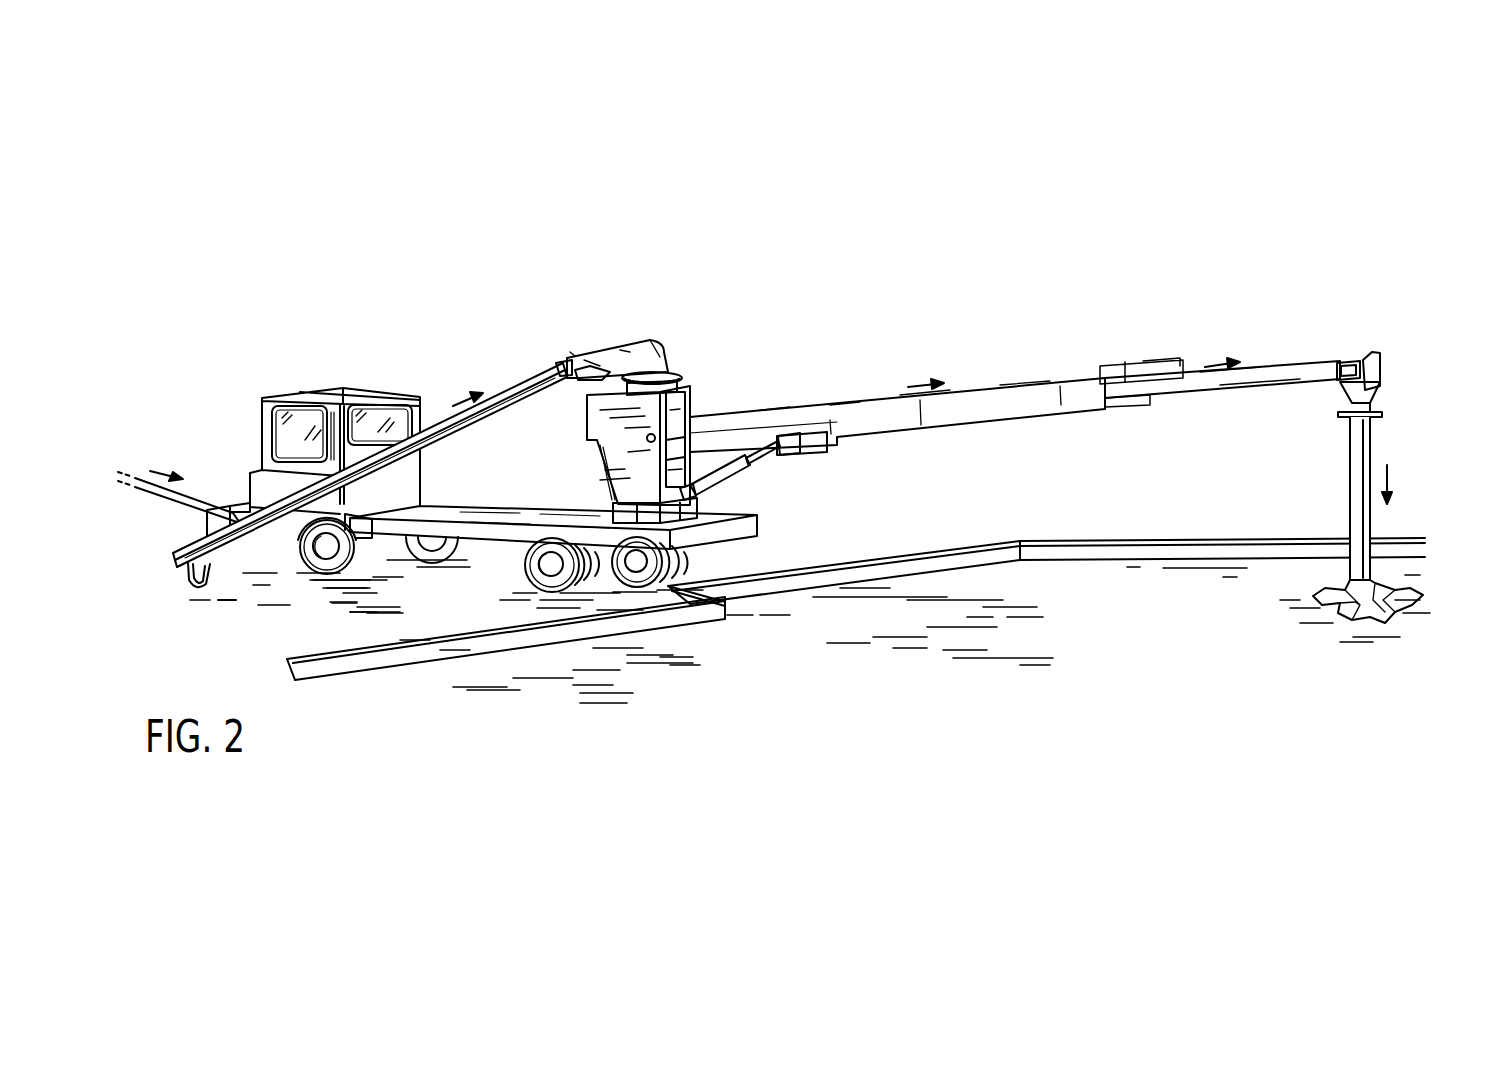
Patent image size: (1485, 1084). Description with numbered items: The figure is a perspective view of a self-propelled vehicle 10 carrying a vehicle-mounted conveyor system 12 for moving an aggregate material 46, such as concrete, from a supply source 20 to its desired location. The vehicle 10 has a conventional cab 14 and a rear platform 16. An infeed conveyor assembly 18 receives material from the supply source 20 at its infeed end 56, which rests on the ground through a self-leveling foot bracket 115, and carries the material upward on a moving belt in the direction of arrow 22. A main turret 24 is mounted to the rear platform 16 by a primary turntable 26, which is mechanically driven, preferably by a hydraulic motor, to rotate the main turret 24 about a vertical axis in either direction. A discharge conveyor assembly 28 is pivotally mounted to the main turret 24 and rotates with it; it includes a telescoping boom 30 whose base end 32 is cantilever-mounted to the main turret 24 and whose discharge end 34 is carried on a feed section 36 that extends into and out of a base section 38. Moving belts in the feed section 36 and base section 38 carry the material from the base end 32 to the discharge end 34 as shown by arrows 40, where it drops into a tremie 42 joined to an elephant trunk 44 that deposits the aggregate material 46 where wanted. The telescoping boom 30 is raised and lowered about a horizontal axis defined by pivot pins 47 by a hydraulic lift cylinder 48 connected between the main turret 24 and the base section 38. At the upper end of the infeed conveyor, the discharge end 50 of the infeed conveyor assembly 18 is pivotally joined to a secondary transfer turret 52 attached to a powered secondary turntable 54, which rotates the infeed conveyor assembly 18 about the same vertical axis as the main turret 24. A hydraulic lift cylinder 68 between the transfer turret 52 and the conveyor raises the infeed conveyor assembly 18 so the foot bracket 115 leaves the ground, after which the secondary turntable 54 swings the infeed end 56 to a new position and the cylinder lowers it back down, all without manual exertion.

The self-propelled vehicle 10 is at (400, 370).
The vehicle-mounted conveyor system 12 is at (566, 348).
The cab 14 is at (305, 392).
The rear platform 16 is at (533, 513).
The infeed conveyor assembly 18 is at (500, 393).
The supply source 20 is at (195, 490).
The arrow 22 is at (455, 400).
The main turret 24 is at (612, 450).
The primary turntable 26 is at (690, 504).
The discharge conveyor assembly 28 is at (970, 351).
The telescoping boom 30 is at (1010, 430).
The base end 32 is at (682, 437).
The discharge end 34 is at (1358, 362).
The feed section 36 is at (1198, 387).
The base section 38 is at (905, 422).
The arrows 40 is at (940, 383).
The tremie 42 is at (1372, 393).
The elephant trunk 44 is at (1357, 477).
The aggregate material 46 is at (1393, 593).
The pivot pins 47 is at (646, 437).
The hydraulic lift cylinder 48 is at (727, 463).
The discharge end 50 is at (552, 380).
The secondary transfer turret 52 is at (650, 332).
The secondary turntable 54 is at (673, 370).
The infeed end 56 is at (227, 572).
The hydraulic lift cylinder 68 is at (603, 376).
The self-leveling foot bracket 115 is at (182, 587).